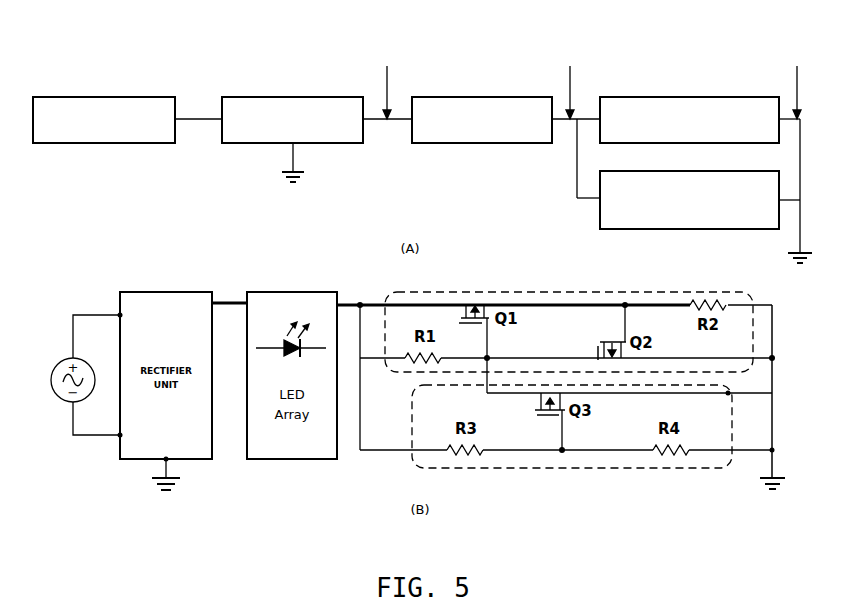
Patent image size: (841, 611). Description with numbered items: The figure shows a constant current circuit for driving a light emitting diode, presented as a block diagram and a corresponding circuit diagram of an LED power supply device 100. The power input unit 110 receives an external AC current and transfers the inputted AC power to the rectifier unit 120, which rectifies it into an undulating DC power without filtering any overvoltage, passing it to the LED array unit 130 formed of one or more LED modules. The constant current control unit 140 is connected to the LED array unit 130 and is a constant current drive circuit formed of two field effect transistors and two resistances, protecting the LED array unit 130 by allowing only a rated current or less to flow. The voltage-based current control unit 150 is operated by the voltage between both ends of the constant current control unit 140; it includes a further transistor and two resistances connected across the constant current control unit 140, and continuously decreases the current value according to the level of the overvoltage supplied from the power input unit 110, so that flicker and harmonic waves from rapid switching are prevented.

The LED power supply device 100 is at (122, 210).
The power input unit 110 is at (103, 97).
The rectifier unit 120 is at (293, 97).
The LED array unit 130 is at (480, 97).
The constant current control unit 140 is at (688, 97).
The voltage-based current control unit 150 is at (600, 212).